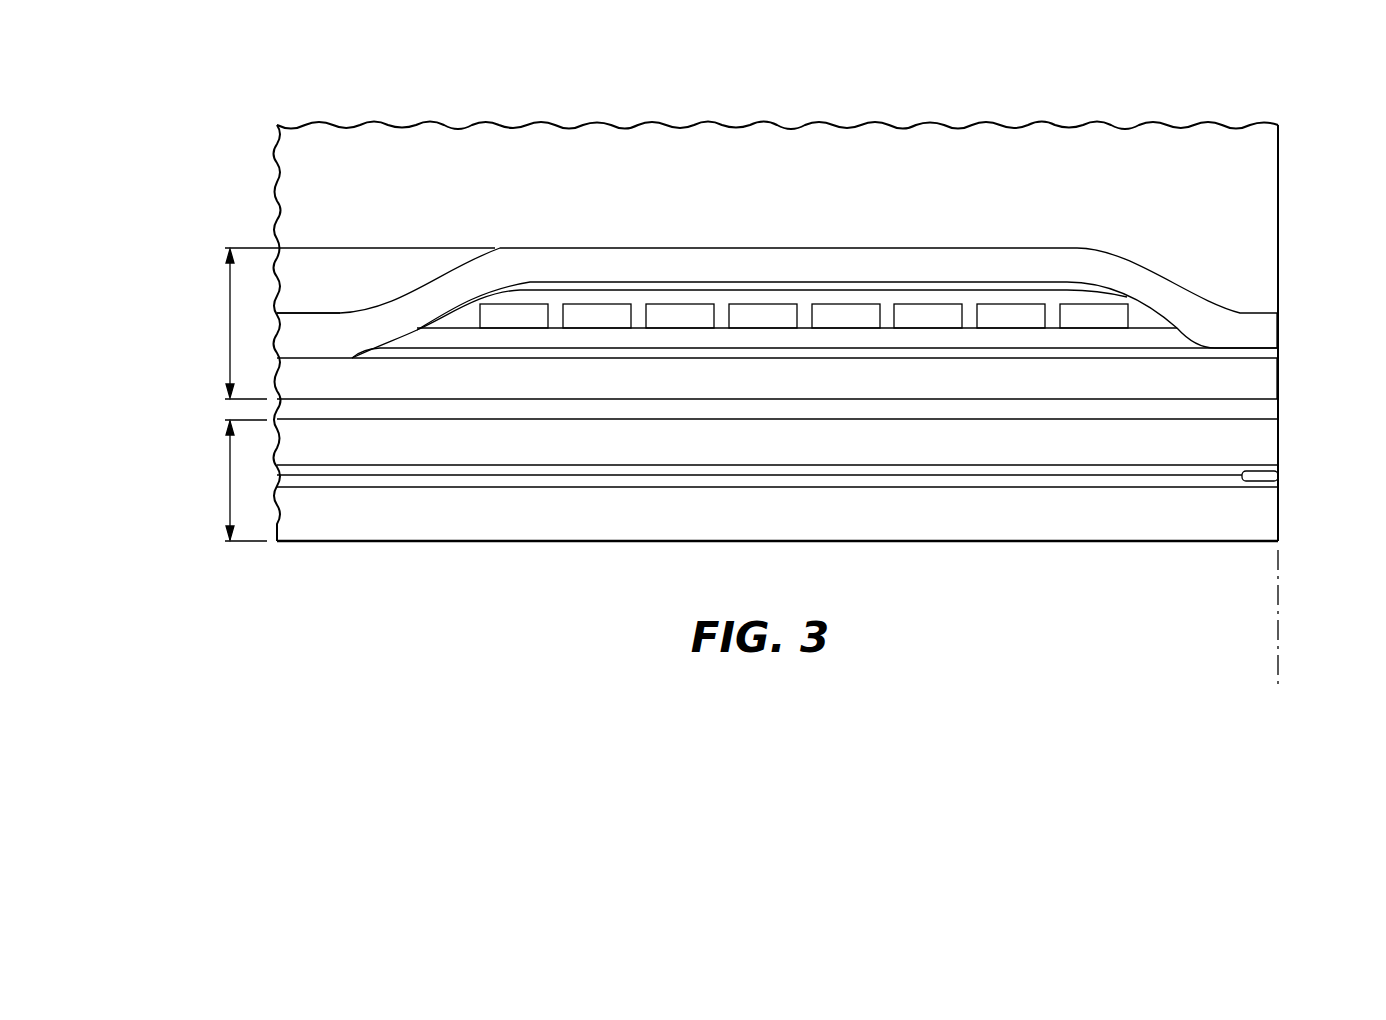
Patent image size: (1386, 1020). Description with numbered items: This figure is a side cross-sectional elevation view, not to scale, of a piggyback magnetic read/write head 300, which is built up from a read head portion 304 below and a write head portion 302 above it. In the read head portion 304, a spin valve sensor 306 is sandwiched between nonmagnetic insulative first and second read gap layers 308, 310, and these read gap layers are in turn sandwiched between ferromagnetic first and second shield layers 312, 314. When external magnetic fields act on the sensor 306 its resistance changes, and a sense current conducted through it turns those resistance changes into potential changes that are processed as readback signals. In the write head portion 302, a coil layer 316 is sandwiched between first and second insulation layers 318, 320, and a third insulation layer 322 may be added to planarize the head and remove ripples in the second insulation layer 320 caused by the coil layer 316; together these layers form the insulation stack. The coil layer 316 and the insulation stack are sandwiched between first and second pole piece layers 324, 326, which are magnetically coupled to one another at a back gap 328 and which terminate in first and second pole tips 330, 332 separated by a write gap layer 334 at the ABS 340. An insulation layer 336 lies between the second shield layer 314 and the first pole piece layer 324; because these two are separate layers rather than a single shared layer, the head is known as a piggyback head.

The magnetic read/write head 300 is at (255, 98).
The write head portion 302 is at (228, 321).
The read head portion 304 is at (228, 483).
The spin valve sensor 306 is at (1279, 476).
The first read gap layer 308 is at (850, 489).
The second read gap layer 310 is at (828, 464).
The first shield layer 312 is at (1151, 533).
The second shield layer 314 is at (1137, 453).
The coil layer 316 is at (755, 312).
The first insulation layer 318 is at (635, 337).
The second insulation layer 320 is at (1147, 317).
The third insulation layer 322 is at (571, 281).
The first pole piece layer 324 is at (1137, 389).
The second pole piece layer 326 is at (985, 253).
The back gap 328 is at (310, 351).
The first pole tip 330 is at (1279, 380).
The second pole tip 332 is at (1279, 328).
The write gap layer 334 is at (1279, 352).
The insulation layer 336 is at (1274, 410).
The ABS 340 is at (1279, 663).